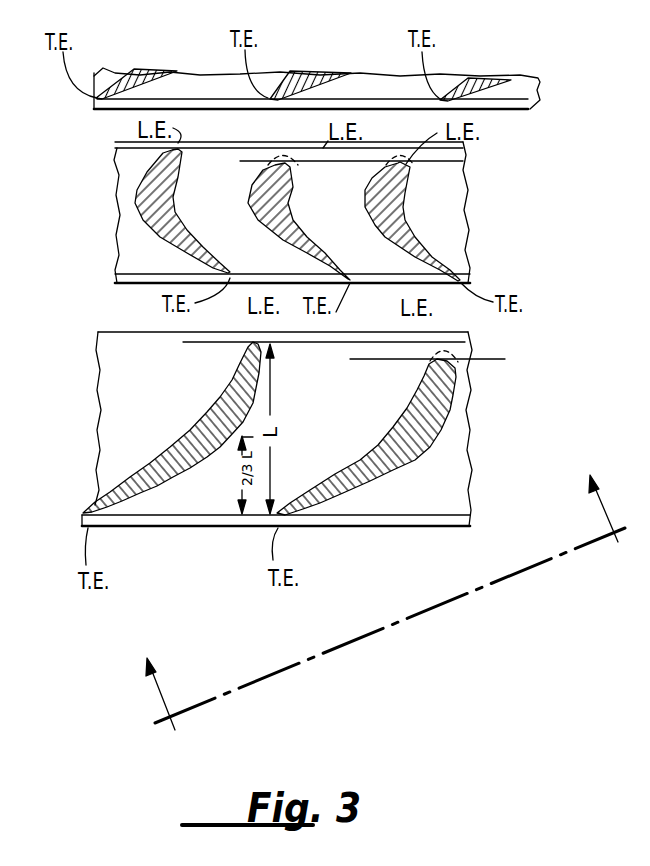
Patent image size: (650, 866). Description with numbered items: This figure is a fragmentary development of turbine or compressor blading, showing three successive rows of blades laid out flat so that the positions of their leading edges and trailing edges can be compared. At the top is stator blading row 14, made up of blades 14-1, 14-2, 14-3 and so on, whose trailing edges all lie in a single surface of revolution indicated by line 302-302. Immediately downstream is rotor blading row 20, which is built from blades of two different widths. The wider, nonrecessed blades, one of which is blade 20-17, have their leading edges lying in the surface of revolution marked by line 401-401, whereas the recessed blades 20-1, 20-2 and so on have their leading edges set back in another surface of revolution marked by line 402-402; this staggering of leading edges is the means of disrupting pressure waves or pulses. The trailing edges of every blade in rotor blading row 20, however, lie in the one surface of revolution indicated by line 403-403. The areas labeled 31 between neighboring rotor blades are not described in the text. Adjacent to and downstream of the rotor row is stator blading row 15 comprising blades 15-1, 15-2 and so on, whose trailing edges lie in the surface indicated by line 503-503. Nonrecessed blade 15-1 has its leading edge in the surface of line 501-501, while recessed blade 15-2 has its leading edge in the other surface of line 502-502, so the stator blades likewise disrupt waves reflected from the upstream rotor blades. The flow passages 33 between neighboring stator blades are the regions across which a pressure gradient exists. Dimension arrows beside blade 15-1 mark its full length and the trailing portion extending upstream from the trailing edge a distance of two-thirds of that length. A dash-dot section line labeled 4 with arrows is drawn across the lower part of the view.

The stator blading row 14 is at (538, 82).
The stator blade 14-1 is at (147, 70).
The stator blade 14-2 is at (320, 70).
The stator blade 14-3 is at (482, 78).
The line 302- 302 is at (95, 98).
The rotor blading row 20 is at (117, 223).
The nonrecessed rotor blade 20-17 is at (187, 233).
The recessed rotor blade 20-1 is at (305, 240).
The recessed rotor blade 20-2 is at (425, 243).
The vane passage 31 is at (130, 178).
The line 401- 401 is at (115, 146).
The line 402- 402 is at (479, 163).
The line 403- 403 is at (115, 274).
The stator blading row 15 is at (470, 443).
The nonrecessed stator blade 15-1 is at (190, 434).
The recessed stator blade 15-2 is at (370, 443).
The flow passages 33 is at (145, 398).
The line 501- 501 is at (515, 342).
The line 502- 502 is at (429, 366).
The line 503- 503 is at (82, 514).
The section line 4- 4 is at (378, 586).